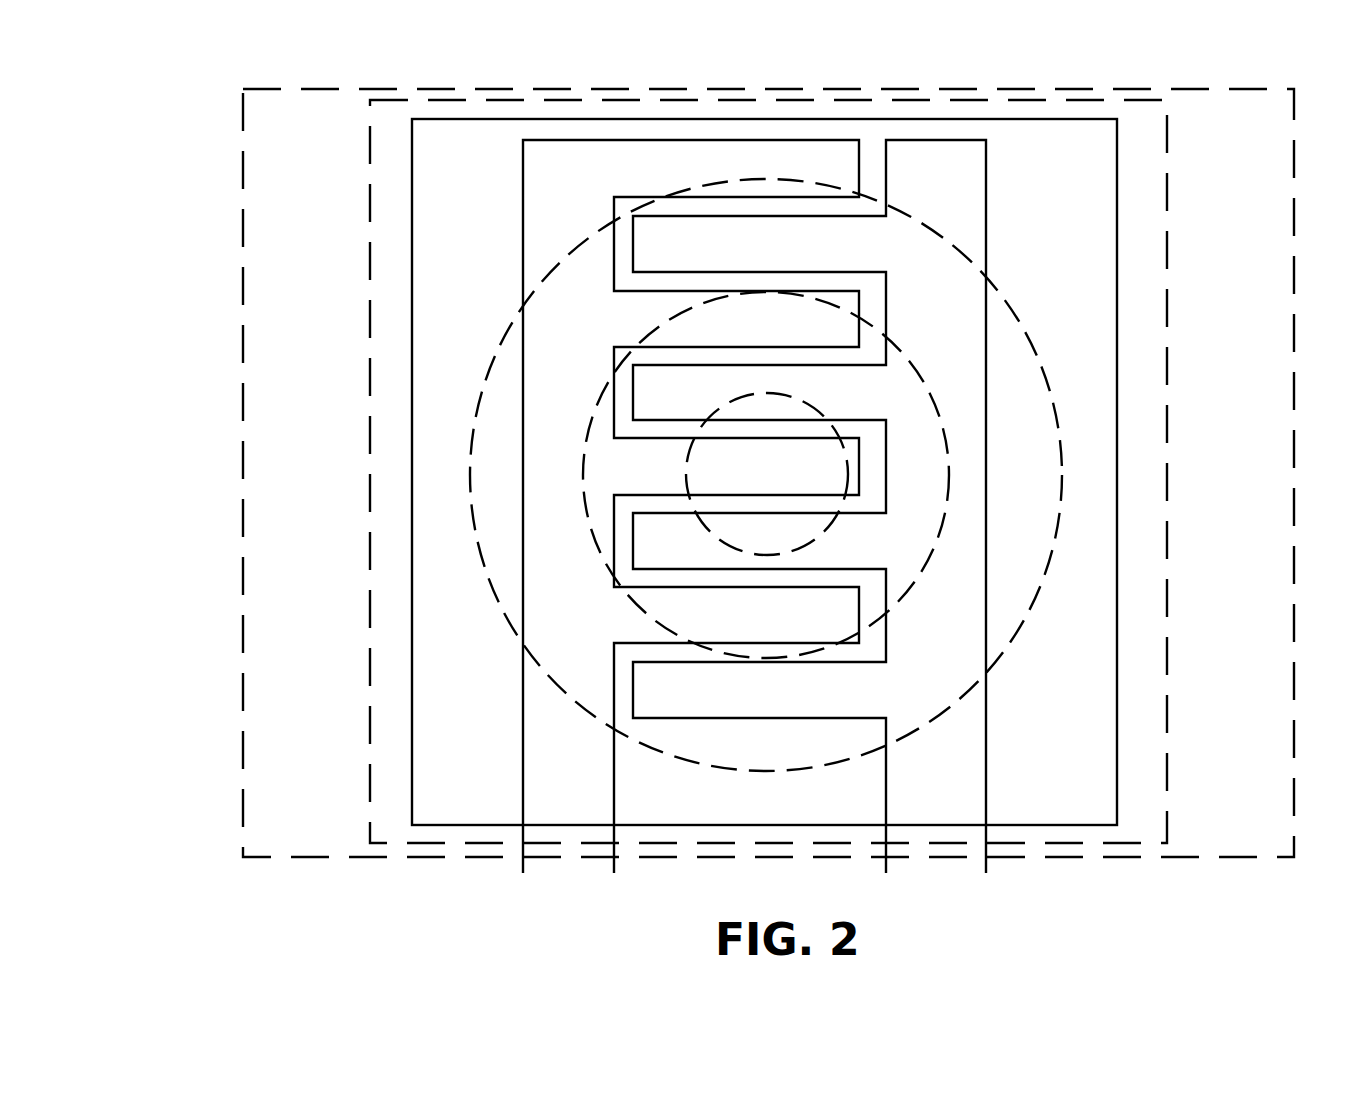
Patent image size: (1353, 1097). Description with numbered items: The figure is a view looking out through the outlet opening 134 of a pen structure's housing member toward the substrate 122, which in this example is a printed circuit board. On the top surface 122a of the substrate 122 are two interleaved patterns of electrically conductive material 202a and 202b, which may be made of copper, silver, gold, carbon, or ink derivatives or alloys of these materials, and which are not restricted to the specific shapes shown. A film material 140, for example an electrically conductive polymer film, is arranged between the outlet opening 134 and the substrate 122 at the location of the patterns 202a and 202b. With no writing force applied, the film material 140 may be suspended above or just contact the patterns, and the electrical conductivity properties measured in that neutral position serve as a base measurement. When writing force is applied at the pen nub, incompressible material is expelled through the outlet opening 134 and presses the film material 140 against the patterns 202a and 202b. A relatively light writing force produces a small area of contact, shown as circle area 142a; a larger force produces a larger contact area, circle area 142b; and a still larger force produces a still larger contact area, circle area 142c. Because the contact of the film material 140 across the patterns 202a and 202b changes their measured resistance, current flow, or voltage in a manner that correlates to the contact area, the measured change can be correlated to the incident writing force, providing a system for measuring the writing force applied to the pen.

The substrate 122 is at (318, 151).
The top surface 122a is at (253, 239).
The outlet opening 134 is at (411, 405).
The film material 140 is at (370, 598).
The circle area 142a is at (687, 475).
The circle area 142b is at (638, 344).
The circle area 142c is at (517, 327).
The pattern of electrically conductive material 202a is at (572, 140).
The pattern of electrically conductive material 202b is at (937, 140).